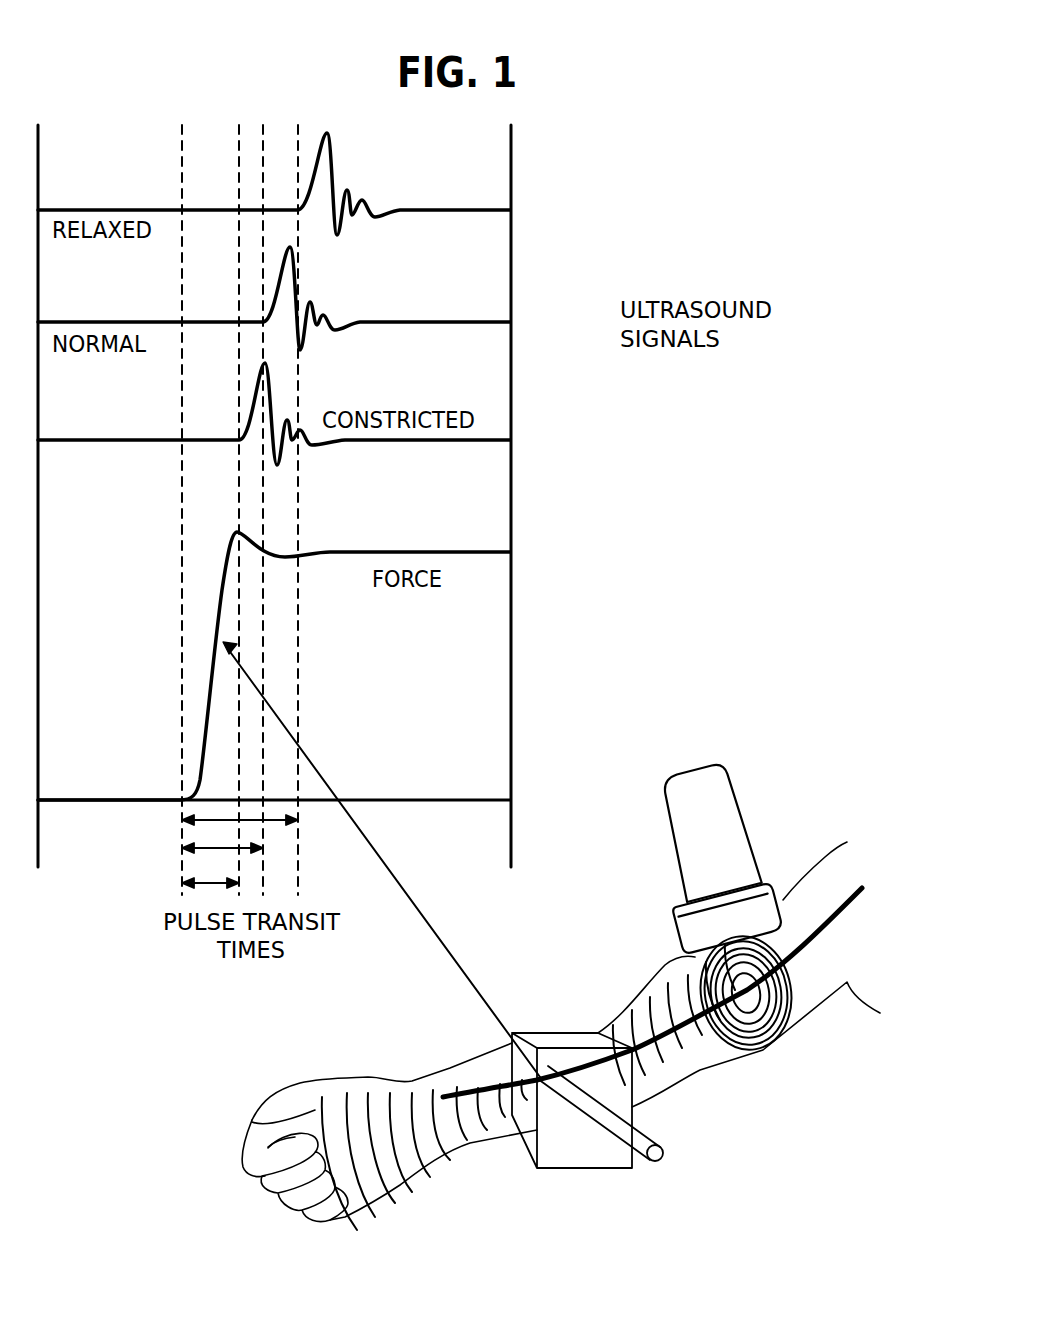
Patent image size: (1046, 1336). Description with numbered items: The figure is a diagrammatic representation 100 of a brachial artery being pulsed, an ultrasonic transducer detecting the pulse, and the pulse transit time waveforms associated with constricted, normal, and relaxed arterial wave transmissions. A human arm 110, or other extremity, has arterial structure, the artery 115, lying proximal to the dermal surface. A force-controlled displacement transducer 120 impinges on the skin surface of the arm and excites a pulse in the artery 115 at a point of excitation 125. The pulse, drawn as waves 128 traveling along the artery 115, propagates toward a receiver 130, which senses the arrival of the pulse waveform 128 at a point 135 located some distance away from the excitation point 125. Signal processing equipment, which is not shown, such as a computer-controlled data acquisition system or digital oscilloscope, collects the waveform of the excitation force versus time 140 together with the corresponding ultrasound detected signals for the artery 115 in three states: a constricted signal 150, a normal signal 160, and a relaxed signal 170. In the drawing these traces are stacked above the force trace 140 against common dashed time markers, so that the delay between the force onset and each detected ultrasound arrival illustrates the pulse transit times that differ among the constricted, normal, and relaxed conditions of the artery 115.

The pulse transit time waveforms representation 100 is at (738, 195).
The human arm 110 is at (333, 1077).
The artery 115 is at (863, 882).
The force-controlled displacement transducer 120 is at (663, 1158).
The point of excitation 125 is at (528, 1057).
The waves 128 is at (413, 1192).
The receiver 130 is at (686, 762).
The sensing point 135 is at (785, 1010).
The excitation force versus time waveform 140 is at (511, 552).
The constricted ultrasound signal 150 is at (511, 440).
The normal ultrasound signal 160 is at (511, 327).
The relaxed ultrasound signal 170 is at (511, 210).